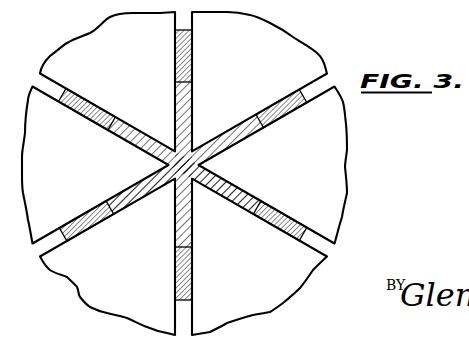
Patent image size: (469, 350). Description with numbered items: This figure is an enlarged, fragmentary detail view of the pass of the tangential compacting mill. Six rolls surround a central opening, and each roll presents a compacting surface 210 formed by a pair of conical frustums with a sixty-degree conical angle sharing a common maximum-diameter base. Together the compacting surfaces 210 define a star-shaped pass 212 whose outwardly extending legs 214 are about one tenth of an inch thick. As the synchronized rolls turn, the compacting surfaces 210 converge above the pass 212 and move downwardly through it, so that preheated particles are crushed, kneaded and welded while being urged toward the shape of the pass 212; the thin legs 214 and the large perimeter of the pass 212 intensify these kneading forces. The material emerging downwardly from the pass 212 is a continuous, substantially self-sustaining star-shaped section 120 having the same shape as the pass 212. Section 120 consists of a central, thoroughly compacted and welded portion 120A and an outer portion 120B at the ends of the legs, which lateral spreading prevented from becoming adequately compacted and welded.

The star-shaped section 120 is at (134, 138).
The central portion 120A is at (228, 129).
The outer portion 120B is at (284, 108).
The compacting surface 210 is at (236, 194).
The star-shaped pass 212 is at (142, 207).
The legs 214 is at (130, 185).